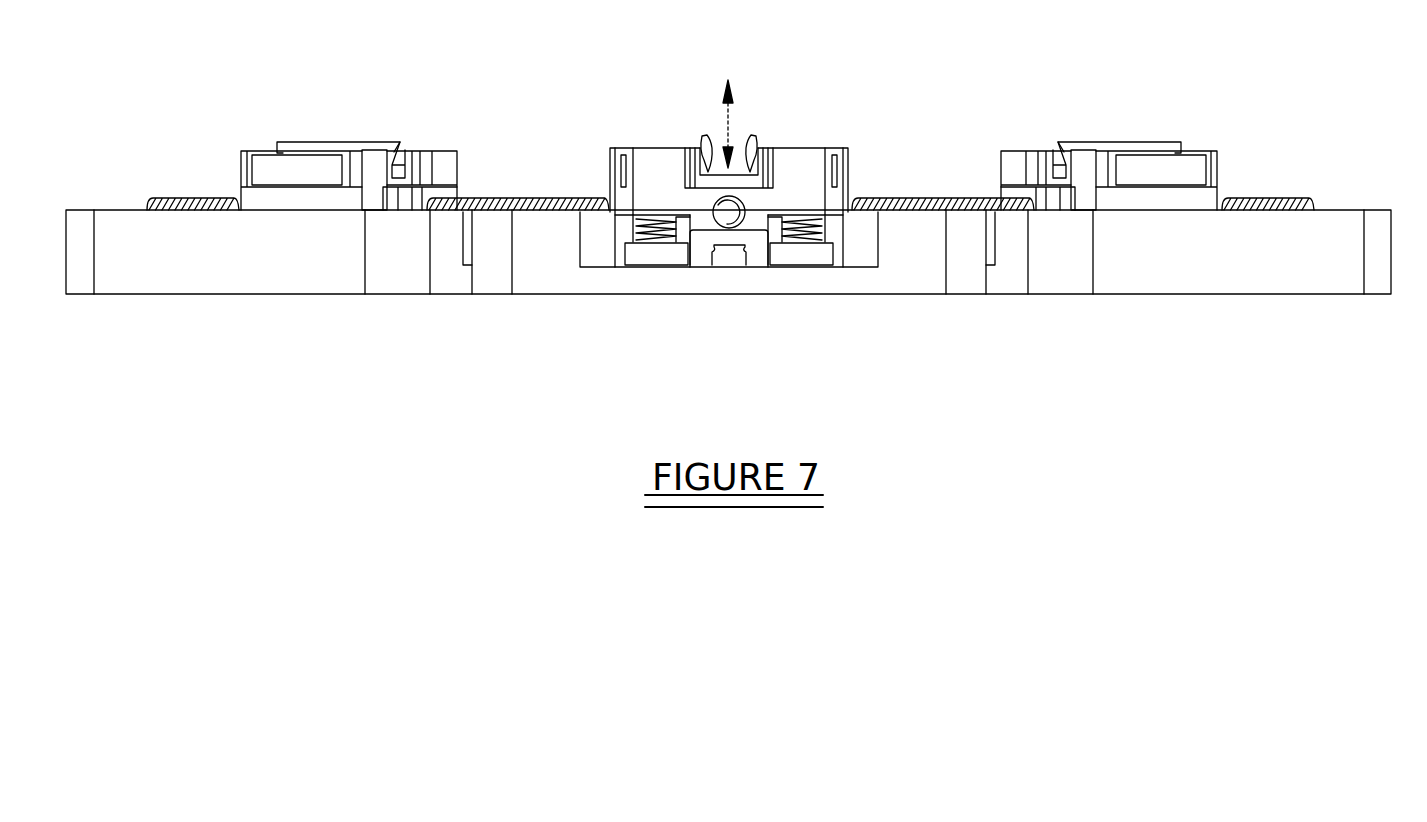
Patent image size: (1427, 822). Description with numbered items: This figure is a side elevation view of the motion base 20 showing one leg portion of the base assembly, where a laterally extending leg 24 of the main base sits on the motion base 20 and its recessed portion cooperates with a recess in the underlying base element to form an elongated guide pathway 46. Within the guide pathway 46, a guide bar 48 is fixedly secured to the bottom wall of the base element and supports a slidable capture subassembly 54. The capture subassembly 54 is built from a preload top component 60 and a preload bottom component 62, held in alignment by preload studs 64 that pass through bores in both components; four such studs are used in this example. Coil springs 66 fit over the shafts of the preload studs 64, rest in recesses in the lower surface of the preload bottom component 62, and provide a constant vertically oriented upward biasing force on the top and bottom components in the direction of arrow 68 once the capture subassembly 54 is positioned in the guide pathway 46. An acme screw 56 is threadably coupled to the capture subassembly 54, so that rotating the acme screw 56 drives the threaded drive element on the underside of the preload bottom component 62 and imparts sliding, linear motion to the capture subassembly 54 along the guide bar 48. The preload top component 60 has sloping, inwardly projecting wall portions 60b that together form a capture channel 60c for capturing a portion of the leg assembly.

The motion base 20 is at (1340, 208).
The laterally extending leg 24 is at (1165, 138).
The guide pathway 46 is at (835, 243).
The guide bar 48 is at (733, 252).
The capture subassembly 54 is at (606, 143).
The acme screw 56 is at (735, 212).
The preload top component 60 is at (652, 175).
The inwardly projecting wall portion 60b is at (708, 146).
The capture channel 60c is at (737, 186).
The preload bottom component 62 is at (622, 190).
The preload stud 64 is at (643, 258).
The coil spring 66 is at (637, 231).
The arrow 68 is at (721, 105).